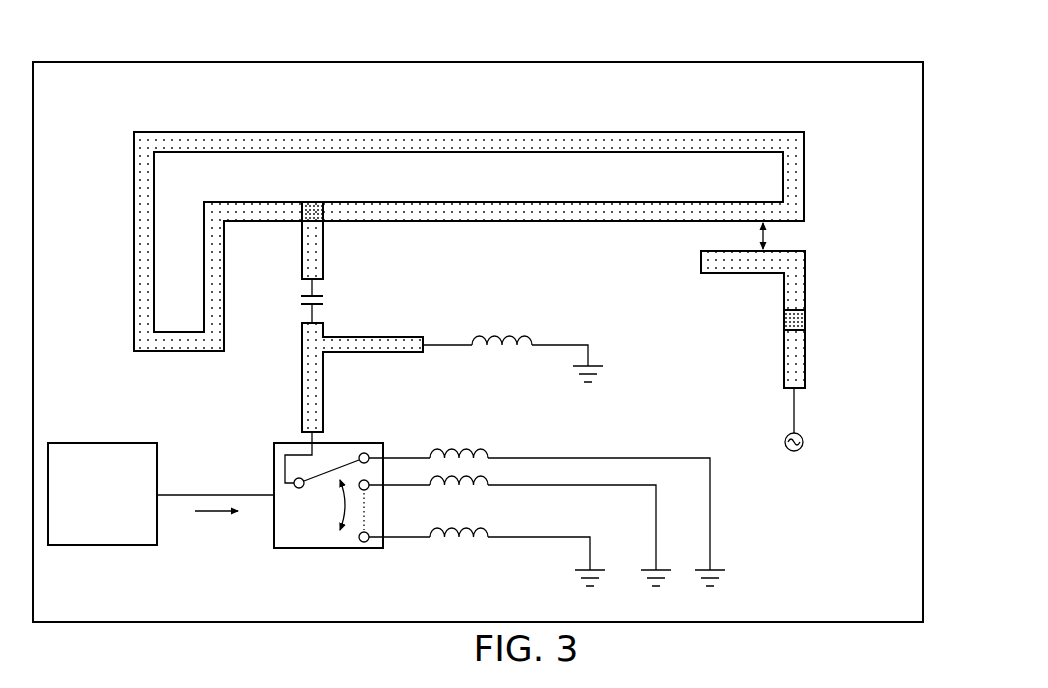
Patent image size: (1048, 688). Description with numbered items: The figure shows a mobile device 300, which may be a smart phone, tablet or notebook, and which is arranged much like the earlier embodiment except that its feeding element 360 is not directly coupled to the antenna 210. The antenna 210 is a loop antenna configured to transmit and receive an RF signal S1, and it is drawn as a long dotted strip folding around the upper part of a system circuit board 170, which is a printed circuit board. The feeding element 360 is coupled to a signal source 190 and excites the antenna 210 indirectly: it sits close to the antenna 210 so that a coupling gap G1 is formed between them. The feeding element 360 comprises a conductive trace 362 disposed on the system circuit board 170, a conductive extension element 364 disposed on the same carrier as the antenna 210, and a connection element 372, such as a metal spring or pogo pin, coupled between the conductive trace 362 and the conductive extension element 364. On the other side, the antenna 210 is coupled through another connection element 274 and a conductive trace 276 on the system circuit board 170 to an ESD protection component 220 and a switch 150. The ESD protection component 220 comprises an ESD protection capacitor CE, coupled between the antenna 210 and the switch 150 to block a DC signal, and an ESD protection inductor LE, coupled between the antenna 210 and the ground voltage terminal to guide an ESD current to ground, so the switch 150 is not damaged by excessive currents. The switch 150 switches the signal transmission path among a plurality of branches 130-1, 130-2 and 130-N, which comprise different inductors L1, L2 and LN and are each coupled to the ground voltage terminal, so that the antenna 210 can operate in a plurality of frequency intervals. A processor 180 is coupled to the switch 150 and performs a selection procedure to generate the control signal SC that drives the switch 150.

The mobile device 300 is at (87, 51).
The system circuit board 170 is at (923, 190).
The antenna 210 is at (503, 131).
The RF signal S1 is at (272, 128).
The connection element 274 is at (308, 201).
The conductive trace 276 is at (302, 250).
The ESD protection component 220 is at (659, 234).
The ESD protection capacitor CE is at (328, 301).
The ESD protection inductor LE is at (503, 333).
The switch 150 is at (328, 549).
The processor 180 is at (103, 546).
The control signal SC is at (214, 513).
The branch 130-1 is at (552, 502).
The branch 130-2 is at (527, 543).
The branch 130-N is at (503, 569).
The inductor L1 is at (458, 447).
The inductor L2 is at (456, 493).
The inductor LN is at (455, 546).
The feeding element 360 is at (808, 319).
The conductive extension element 364 is at (806, 268).
The connection element 372 is at (806, 320).
The conductive trace 362 is at (825, 359).
The coupling gap G1 is at (770, 237).
The signal source 190 is at (806, 440).